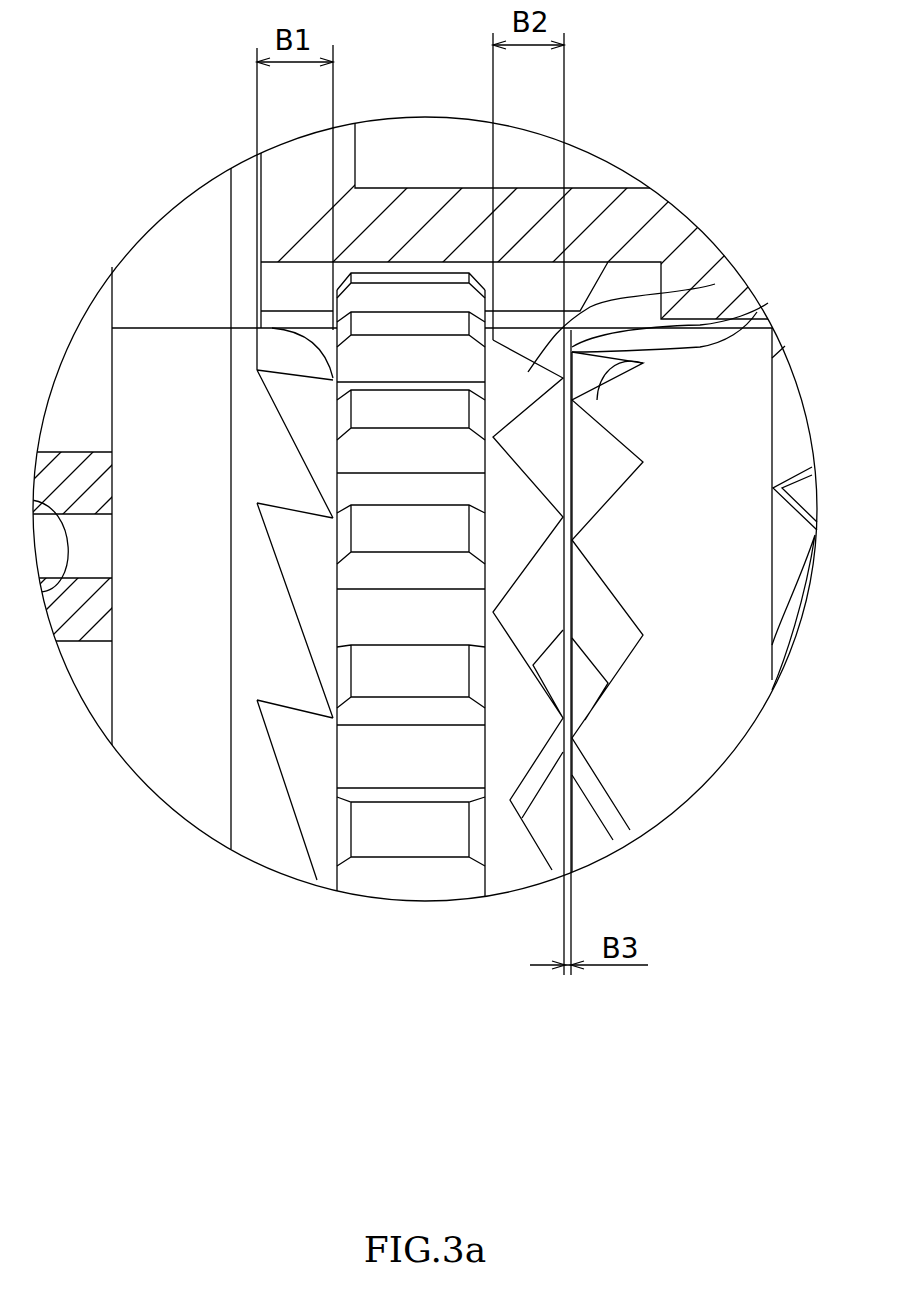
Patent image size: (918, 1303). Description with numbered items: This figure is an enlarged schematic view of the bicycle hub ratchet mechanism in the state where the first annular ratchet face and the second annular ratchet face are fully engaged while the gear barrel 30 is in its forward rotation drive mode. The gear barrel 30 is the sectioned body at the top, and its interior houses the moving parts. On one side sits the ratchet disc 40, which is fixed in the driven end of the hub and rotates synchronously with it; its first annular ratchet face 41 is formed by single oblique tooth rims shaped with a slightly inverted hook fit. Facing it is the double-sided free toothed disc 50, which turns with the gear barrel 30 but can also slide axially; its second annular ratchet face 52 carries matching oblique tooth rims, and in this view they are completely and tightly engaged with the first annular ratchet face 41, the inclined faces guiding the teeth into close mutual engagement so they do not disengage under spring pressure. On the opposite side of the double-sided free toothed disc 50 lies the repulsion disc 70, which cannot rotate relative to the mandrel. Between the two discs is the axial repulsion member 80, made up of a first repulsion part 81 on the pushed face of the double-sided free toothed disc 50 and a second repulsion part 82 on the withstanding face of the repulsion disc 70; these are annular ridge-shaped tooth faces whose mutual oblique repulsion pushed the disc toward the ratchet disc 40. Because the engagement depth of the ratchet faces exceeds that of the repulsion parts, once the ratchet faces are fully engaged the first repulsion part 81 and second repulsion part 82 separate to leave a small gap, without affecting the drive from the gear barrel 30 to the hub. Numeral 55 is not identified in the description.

The gear barrel 30 is at (612, 228).
The ratchet disc 40 is at (188, 745).
The first annular ratchet face 41 is at (275, 753).
The double-sided free toothed disc 50 is at (415, 833).
The second annular ratchet face 52 is at (298, 833).
The thread 55 is at (407, 320).
The repulsion disc 70 is at (705, 740).
The axial repulsion member 80 is at (790, 192).
The first repulsion part 81 is at (715, 284).
The second repulsion part 82 is at (757, 312).